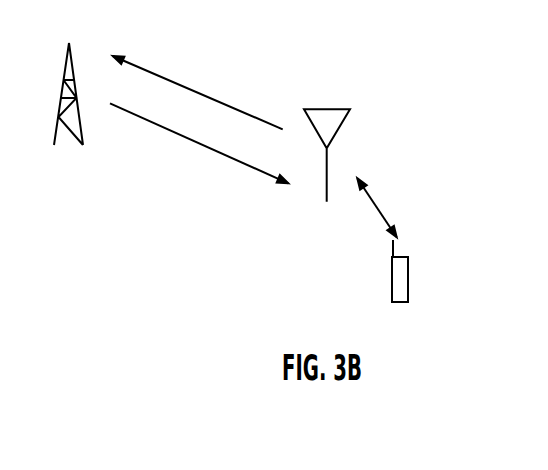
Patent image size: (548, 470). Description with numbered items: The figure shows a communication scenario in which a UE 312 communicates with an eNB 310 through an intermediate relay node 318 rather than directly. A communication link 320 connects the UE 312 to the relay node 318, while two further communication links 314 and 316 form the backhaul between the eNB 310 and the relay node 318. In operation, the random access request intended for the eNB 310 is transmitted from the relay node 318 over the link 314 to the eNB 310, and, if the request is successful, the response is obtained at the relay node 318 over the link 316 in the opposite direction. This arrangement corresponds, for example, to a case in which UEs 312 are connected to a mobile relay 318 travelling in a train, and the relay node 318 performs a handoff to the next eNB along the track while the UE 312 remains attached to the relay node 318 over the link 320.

The eNB 310 is at (62, 97).
The UE 312 is at (408, 302).
The communication link 314 is at (248, 114).
The communication link 316 is at (223, 152).
The relay node 318 is at (325, 109).
The communication link 320 is at (378, 207).